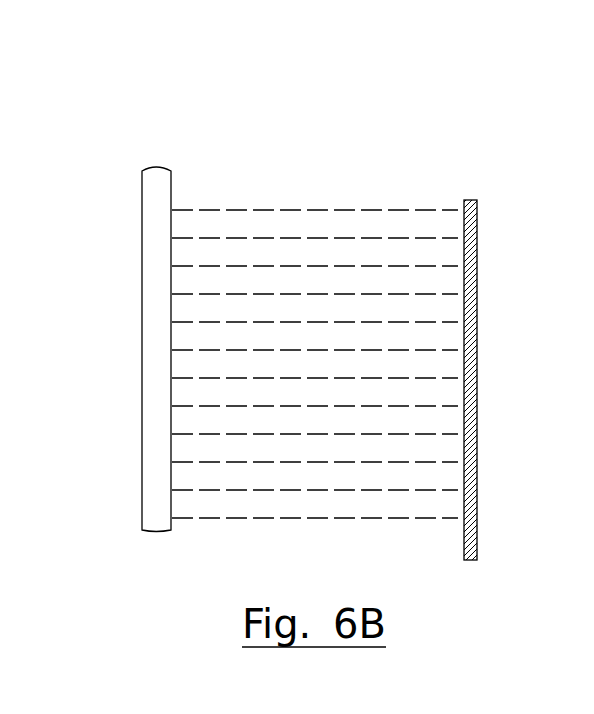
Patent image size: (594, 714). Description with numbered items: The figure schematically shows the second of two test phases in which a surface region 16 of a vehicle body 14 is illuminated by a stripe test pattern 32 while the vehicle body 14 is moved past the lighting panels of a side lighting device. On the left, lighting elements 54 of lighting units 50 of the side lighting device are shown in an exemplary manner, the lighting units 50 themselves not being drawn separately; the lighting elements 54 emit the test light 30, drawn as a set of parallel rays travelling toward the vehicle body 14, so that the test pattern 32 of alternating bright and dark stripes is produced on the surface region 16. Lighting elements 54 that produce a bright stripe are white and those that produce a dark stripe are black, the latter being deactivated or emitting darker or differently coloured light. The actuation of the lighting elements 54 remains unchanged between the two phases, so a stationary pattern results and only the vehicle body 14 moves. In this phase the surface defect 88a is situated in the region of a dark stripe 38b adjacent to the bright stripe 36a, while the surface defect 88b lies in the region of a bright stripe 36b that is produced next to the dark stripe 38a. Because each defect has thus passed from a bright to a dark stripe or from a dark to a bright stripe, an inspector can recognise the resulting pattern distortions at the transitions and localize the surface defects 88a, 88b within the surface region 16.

The lighting unit 50 is at (151, 112).
The lighting element 54 is at (162, 362).
The test light 30 is at (254, 188).
The test pattern 32 is at (456, 282).
The surface region 16 is at (465, 203).
The vehicle body 14 is at (470, 562).
The bright stripe 36a is at (463, 331).
The dark stripe 38b is at (463, 365).
The dark stripe 38a is at (463, 414).
The bright stripe 36b is at (463, 443).
The surface defect 88a is at (477, 360).
The surface defect 88b is at (477, 447).